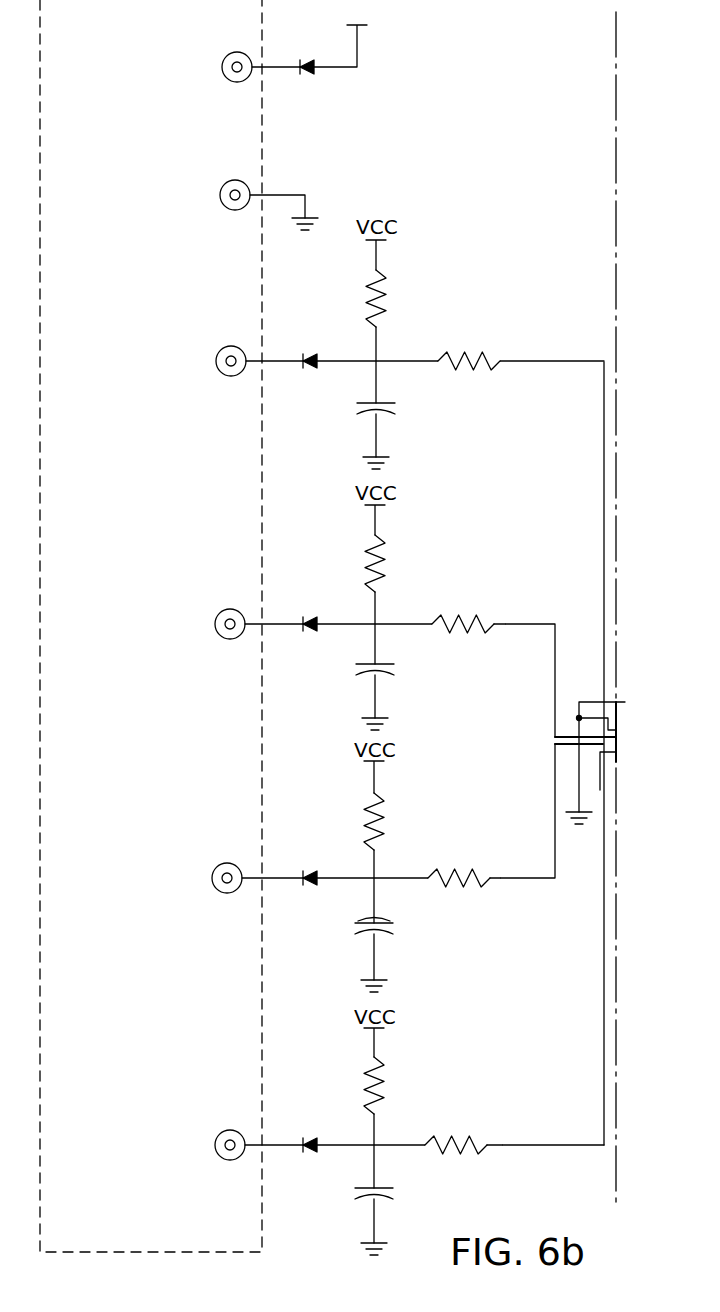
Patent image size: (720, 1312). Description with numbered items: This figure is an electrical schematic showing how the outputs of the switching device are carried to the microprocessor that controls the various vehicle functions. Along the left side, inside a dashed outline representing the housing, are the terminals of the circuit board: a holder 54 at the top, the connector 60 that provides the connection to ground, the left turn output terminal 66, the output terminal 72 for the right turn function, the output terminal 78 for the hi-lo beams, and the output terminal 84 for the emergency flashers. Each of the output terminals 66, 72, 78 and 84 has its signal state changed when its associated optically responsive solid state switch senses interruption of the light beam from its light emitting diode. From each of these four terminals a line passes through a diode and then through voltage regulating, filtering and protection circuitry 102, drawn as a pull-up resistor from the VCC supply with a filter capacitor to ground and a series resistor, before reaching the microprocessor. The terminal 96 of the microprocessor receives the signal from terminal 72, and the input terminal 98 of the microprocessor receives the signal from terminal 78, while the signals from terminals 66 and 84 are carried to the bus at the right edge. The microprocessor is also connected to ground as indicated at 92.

The holder 54 is at (247, 53).
The connector 60 is at (232, 180).
The left turn output terminal 66 is at (228, 346).
The output terminal 72 is at (228, 608).
The output terminal 78 is at (225, 862).
The output terminal 84 is at (227, 1129).
The ground connection 92 is at (586, 797).
The terminal of microprocessor 96 is at (566, 737).
The input terminal of microprocessor 98 is at (575, 744).
The voltage regulating filtering and protection circuitry 102 is at (440, 327).